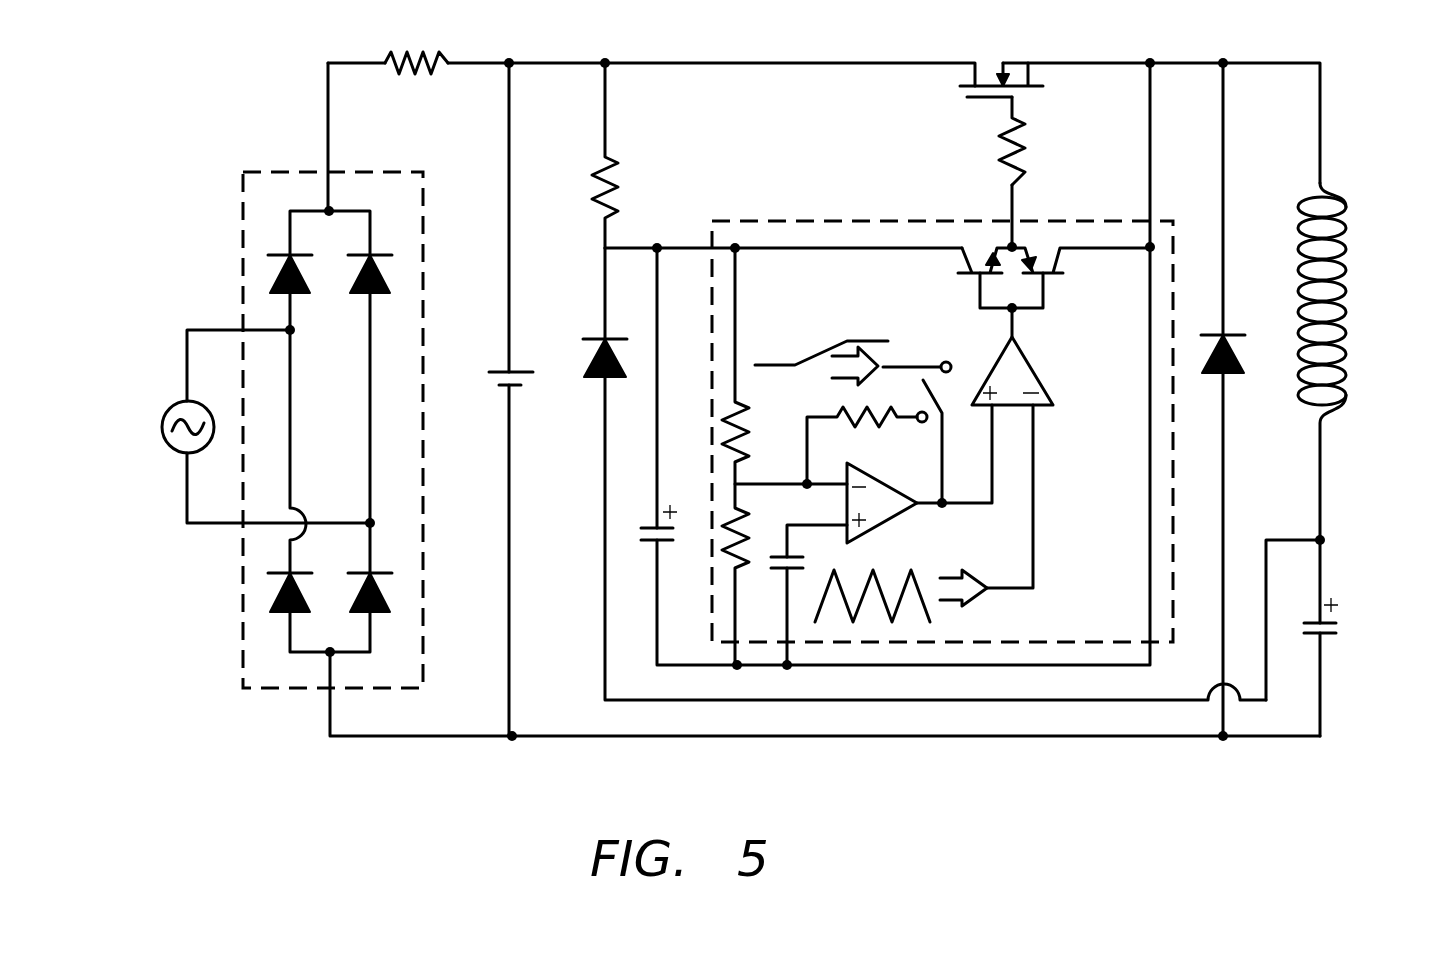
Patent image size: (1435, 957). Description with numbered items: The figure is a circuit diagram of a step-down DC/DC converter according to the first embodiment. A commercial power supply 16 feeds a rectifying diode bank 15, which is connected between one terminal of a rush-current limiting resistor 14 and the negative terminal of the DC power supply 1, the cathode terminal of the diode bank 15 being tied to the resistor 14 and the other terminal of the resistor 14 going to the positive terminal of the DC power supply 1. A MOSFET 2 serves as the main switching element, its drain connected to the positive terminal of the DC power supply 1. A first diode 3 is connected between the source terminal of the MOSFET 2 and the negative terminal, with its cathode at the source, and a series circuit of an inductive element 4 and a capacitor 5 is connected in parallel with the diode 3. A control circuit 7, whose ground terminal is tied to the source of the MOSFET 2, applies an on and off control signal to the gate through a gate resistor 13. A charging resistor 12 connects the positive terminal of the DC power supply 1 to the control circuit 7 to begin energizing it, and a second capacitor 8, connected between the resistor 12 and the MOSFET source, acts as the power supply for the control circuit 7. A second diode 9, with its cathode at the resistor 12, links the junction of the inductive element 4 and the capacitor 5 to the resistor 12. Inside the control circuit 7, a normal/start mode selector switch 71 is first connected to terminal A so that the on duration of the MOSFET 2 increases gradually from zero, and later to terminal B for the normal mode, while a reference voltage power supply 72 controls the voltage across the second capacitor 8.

The DC power supply 1 is at (500, 370).
The MOSFET 2 is at (1005, 62).
The first diode 3 is at (1240, 362).
The inductive element 4 is at (1348, 288).
The capacitor 5 is at (1330, 636).
The control circuit 7 is at (920, 417).
The second capacitor 8 is at (650, 542).
The second diode 9 is at (597, 378).
The charging resistor 12 is at (618, 178).
The gate resistor 13 is at (1000, 155).
The rush-current limiting resistor 14 is at (432, 58).
The rectifying diode bank 15 is at (283, 690).
The commercial power supply 16 is at (177, 405).
The normal/start mode selector switch 71 is at (937, 398).
The reference voltage power supply 72 is at (785, 572).